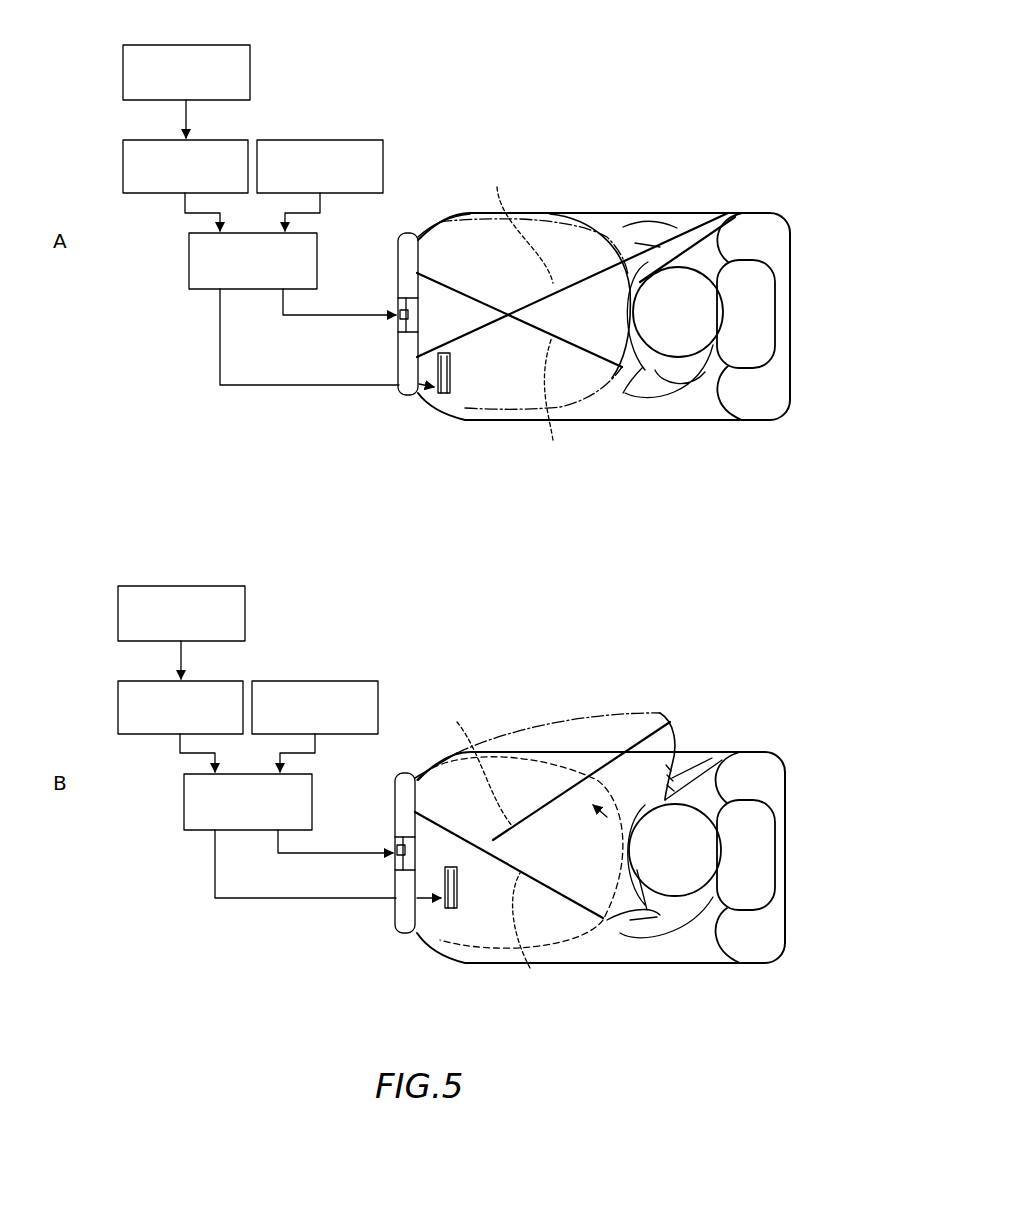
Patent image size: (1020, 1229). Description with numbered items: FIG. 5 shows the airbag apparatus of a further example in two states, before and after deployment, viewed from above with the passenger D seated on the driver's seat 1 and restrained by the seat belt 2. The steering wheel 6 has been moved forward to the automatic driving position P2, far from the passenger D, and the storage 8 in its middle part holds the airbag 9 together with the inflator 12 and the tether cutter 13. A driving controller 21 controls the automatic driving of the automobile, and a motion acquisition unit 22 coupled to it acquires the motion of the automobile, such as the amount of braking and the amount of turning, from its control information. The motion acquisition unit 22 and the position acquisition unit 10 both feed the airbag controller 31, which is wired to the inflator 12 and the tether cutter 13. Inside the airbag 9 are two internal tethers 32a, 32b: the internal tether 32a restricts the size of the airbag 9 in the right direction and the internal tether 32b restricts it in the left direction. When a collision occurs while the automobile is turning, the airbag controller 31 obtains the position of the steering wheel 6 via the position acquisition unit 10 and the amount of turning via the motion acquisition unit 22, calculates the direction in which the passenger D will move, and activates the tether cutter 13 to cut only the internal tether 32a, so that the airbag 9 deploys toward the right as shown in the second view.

The driving controller 21 is at (155, 45).
The motion acquisition unit 22 is at (158, 140).
The position acquisition unit 10 is at (301, 140).
The airbag controller 31 is at (189, 251).
The driver's seat 1 is at (790, 250).
The seat belt 2 is at (702, 218).
The steering wheel 6 is at (399, 240).
The storage 8 is at (399, 292).
The inflator 12 is at (400, 313).
The airbag 9 is at (568, 212).
The internal tether 32a is at (520, 556).
The internal tether 32b is at (542, 672).
The tether cutter 13 is at (455, 394).
The automatic driving position P2 is at (407, 396).
The passenger D is at (667, 362).